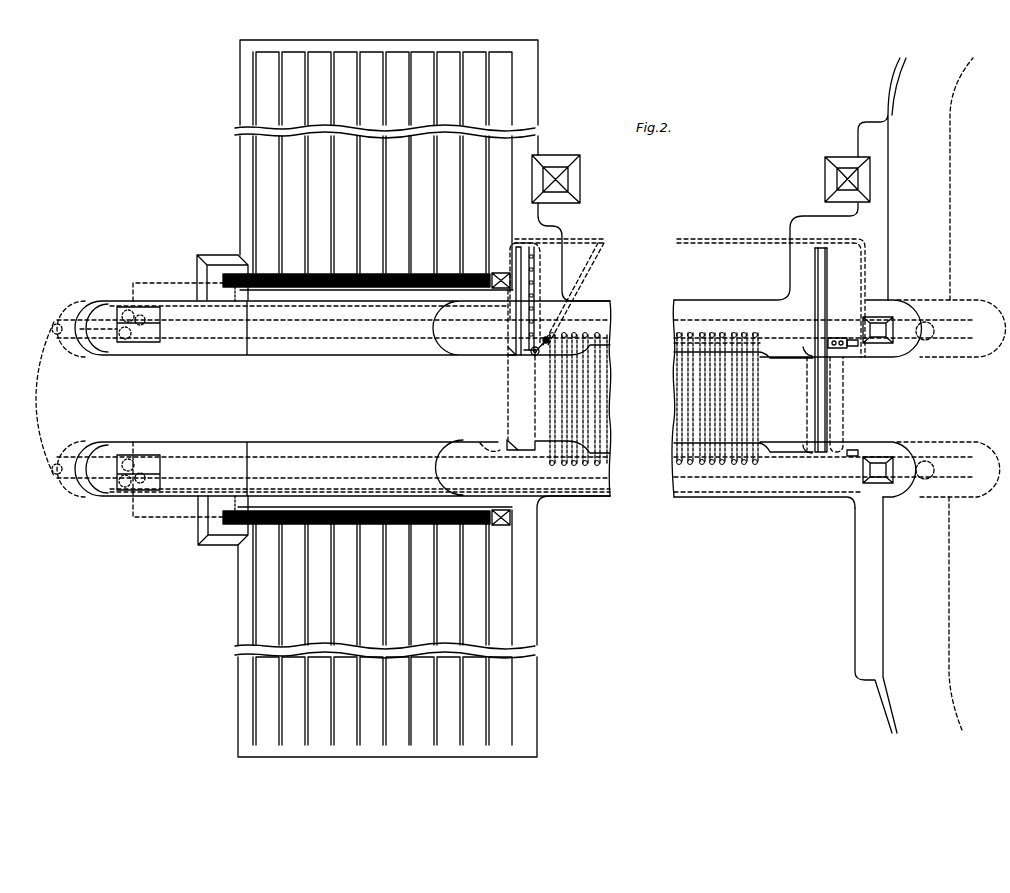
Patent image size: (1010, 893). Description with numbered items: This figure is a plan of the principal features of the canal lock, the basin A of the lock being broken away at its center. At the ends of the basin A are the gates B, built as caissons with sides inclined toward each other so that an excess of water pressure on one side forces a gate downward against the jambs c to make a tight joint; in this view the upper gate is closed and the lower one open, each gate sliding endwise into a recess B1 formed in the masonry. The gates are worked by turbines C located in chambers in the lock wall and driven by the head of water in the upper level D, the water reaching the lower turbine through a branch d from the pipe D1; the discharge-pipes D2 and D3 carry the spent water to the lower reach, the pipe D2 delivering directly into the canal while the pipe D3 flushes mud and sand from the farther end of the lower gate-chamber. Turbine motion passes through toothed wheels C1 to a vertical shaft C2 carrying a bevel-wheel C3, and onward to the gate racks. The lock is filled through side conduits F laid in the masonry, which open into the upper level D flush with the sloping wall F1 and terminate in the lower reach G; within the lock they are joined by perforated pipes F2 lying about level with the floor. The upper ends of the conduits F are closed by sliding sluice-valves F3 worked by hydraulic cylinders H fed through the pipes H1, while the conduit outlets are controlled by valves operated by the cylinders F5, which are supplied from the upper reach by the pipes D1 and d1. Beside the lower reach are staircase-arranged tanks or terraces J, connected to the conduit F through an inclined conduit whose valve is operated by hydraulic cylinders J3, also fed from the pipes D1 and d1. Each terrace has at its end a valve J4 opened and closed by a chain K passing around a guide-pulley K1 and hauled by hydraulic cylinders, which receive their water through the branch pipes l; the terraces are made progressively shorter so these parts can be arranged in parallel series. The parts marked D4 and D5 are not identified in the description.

The tanks or terraces J is at (422, 398).
The chain K is at (356, 399).
The guide-pulley K1 is at (496, 402).
The valve J4 is at (190, 400).
The hydraulic cylinders J3 is at (150, 470).
The cylinders F5 is at (131, 398).
The branch pipes l is at (239, 397).
The side conduits F is at (516, 355).
The lower reach G is at (50, 399).
The draw bar body D4 is at (360, 438).
The pipes F2 is at (752, 392).
The basin of the lock A is at (642, 398).
The discharge-pipe D2 is at (848, 402).
The pipe d1 is at (605, 492).
The pipe D1 is at (863, 283).
The discharge-pipe D3 is at (525, 285).
The rack D5 is at (538, 278).
The branch d is at (573, 294).
The gates B is at (512, 322).
The recess B1 is at (822, 258).
The jambs c is at (653, 395).
The toothed wheels C1 is at (851, 364).
The vertical shaft C2 is at (536, 355).
The bevel-wheel C3 is at (535, 351).
The turbine C is at (836, 334).
The pipes H1 is at (855, 388).
The hydraulic cylinders H is at (874, 457).
The sliding sluice-valves F3 is at (910, 390).
The sloping wall F1 is at (951, 398).
The upper level D is at (755, 395).